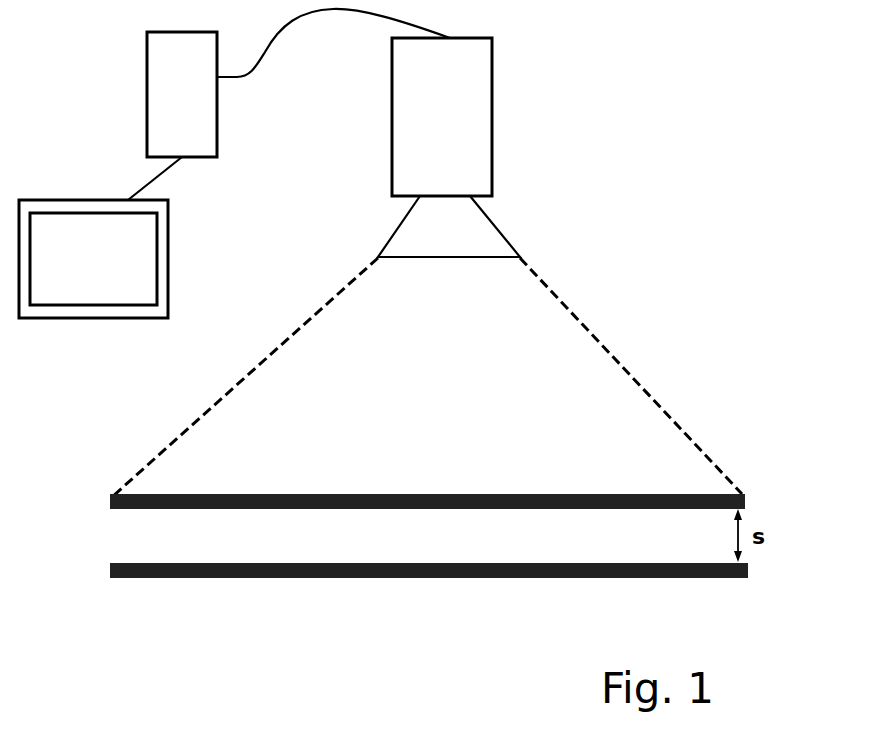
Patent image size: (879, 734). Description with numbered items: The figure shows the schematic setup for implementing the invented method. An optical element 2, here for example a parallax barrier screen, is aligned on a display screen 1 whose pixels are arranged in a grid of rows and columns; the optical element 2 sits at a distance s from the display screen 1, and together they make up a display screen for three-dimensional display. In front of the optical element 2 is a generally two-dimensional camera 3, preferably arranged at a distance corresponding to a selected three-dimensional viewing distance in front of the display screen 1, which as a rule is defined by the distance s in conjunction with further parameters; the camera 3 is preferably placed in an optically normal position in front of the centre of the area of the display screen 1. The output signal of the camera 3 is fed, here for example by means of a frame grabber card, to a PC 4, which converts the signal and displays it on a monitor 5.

The display screen 1 is at (748, 568).
The optical element 2 is at (745, 498).
The camera 3 is at (492, 97).
The PC 4 is at (147, 83).
The monitor 5 is at (168, 231).